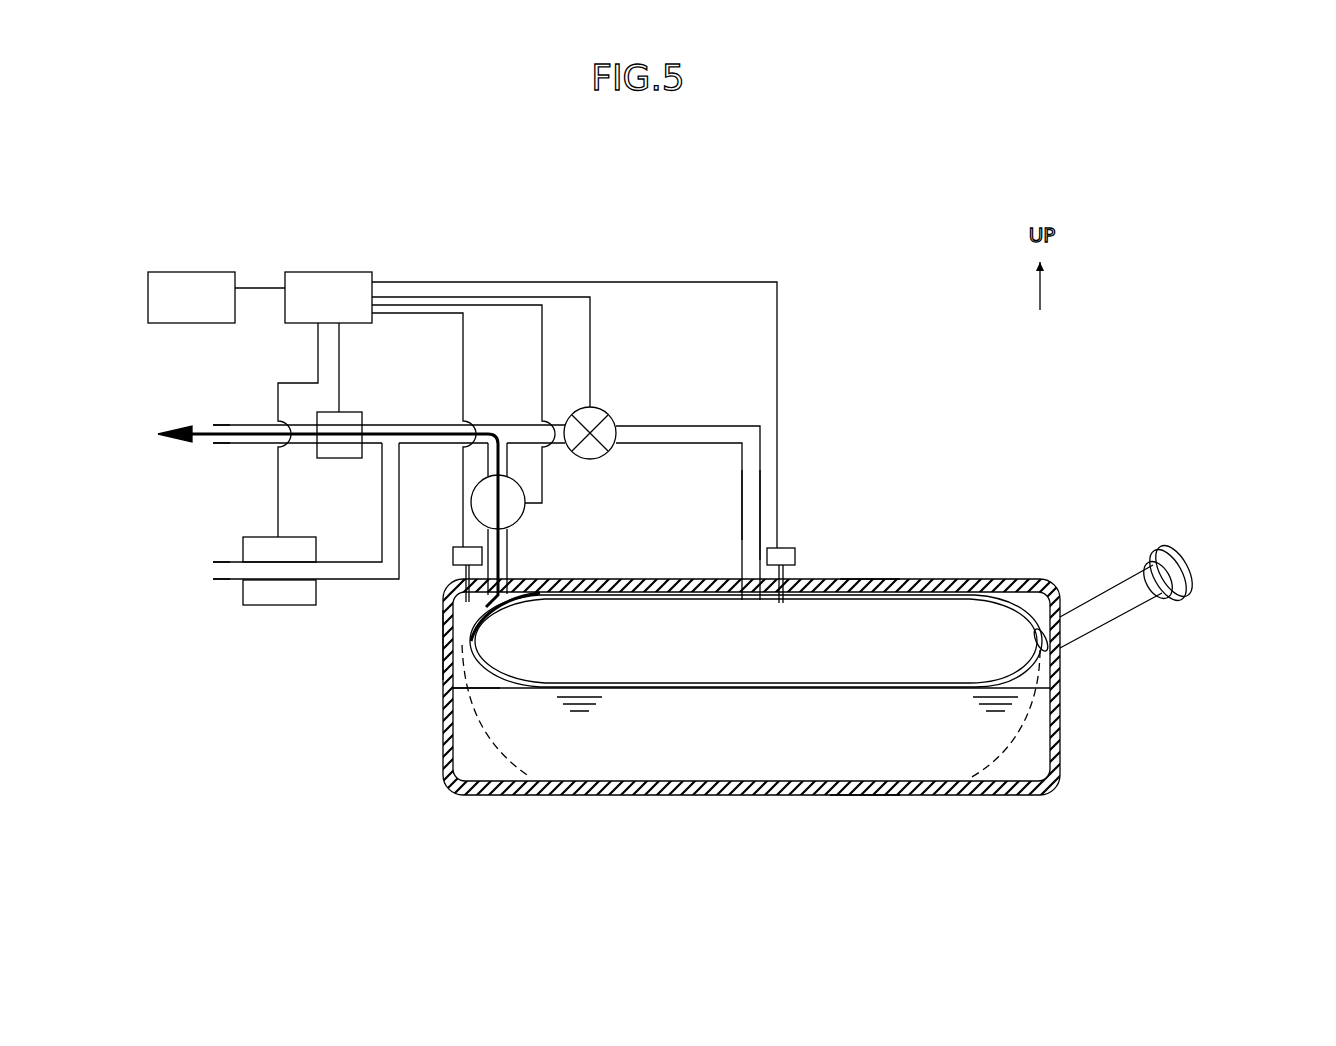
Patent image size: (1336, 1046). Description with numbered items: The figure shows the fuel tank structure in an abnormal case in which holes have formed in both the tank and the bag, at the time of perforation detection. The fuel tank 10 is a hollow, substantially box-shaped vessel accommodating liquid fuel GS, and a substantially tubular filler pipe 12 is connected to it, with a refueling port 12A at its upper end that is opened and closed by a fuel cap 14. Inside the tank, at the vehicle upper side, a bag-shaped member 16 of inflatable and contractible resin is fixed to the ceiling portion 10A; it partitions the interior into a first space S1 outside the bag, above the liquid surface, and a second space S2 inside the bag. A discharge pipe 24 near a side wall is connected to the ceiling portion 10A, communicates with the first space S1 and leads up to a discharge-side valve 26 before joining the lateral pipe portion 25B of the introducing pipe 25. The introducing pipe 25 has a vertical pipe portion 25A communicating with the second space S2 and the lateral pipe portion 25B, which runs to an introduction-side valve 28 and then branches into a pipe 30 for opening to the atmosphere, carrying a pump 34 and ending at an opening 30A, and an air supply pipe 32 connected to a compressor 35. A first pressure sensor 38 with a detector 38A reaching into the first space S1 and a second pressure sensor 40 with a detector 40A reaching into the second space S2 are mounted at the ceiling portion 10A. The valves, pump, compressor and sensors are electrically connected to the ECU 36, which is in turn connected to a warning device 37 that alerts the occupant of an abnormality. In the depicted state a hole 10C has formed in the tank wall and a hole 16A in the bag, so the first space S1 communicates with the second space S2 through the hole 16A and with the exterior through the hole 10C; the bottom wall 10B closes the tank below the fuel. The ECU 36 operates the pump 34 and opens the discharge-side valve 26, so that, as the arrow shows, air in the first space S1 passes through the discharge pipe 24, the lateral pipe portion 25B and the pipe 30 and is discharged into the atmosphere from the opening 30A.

The fuel tank 10 is at (742, 797).
The ceiling portion 10A is at (878, 592).
The bottom wall of tank 10B is at (862, 781).
The hole 10C is at (466, 622).
The filler pipe 12 is at (1101, 588).
The refueling port 12A is at (1172, 563).
The fuel cap 14 is at (1190, 580).
The bag-shaped member 16 is at (1008, 607).
The hole 16A is at (474, 640).
The discharge pipe 24 is at (509, 552).
The introducing pipe 25 is at (740, 535).
The vertical pipe portion 25A is at (740, 488).
The lateral pipe portion 25B is at (712, 425).
The discharge-side valve 26 is at (527, 510).
The introduction-side valve 28 is at (605, 413).
The pipe for opening to the atmosphere 30 is at (251, 420).
The opening 30A is at (212, 447).
The air supply pipe 32 is at (335, 584).
The pump 34 is at (350, 412).
The compressor 35 is at (265, 606).
The ECU 36 is at (328, 272).
The warning device 37 is at (188, 272).
The first pressure sensor 38 is at (453, 545).
The detector 38A is at (462, 589).
The second pressure sensor 40 is at (786, 547).
The detector 40A is at (788, 573).
The first space S1 is at (456, 677).
The second space S2 is at (752, 656).
The fuel GS is at (1035, 758).